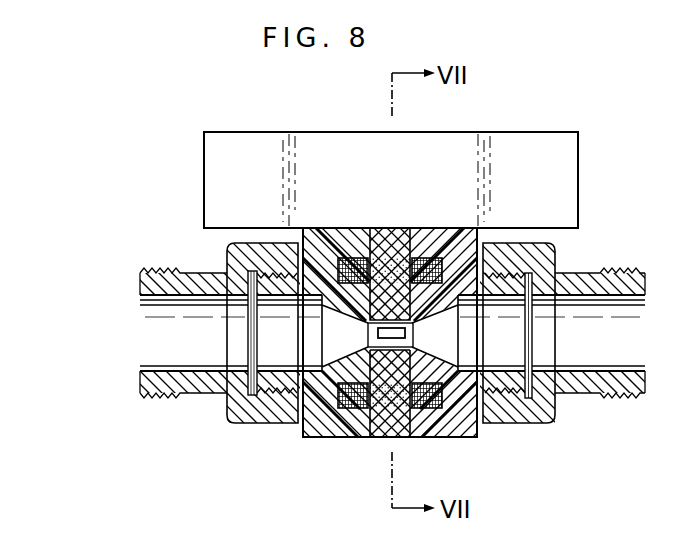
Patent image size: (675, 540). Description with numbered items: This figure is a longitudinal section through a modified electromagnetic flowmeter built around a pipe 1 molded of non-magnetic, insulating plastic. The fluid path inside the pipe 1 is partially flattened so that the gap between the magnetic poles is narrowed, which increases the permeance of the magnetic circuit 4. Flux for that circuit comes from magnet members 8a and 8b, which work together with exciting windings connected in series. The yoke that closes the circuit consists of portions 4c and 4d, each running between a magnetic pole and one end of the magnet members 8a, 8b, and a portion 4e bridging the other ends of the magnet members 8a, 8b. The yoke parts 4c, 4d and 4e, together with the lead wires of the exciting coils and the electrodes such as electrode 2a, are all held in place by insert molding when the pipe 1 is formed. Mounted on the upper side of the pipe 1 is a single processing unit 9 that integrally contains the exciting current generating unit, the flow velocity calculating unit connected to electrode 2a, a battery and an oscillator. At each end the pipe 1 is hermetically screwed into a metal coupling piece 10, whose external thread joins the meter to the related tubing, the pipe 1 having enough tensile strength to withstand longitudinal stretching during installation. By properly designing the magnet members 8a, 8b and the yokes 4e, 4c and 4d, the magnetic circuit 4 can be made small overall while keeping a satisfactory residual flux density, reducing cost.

The pipe 1 is at (470, 437).
The electrode 2a is at (405, 333).
The magnetic circuit 4 is at (100, 475).
The yoke portion 4c is at (368, 305).
The yoke portion 4d is at (372, 352).
The yoke portion 4e is at (383, 246).
The magnet member 8a is at (374, 303).
The magnet member 8b is at (345, 372).
The processing unit 9 is at (578, 205).
The coupling piece 10 is at (165, 393).